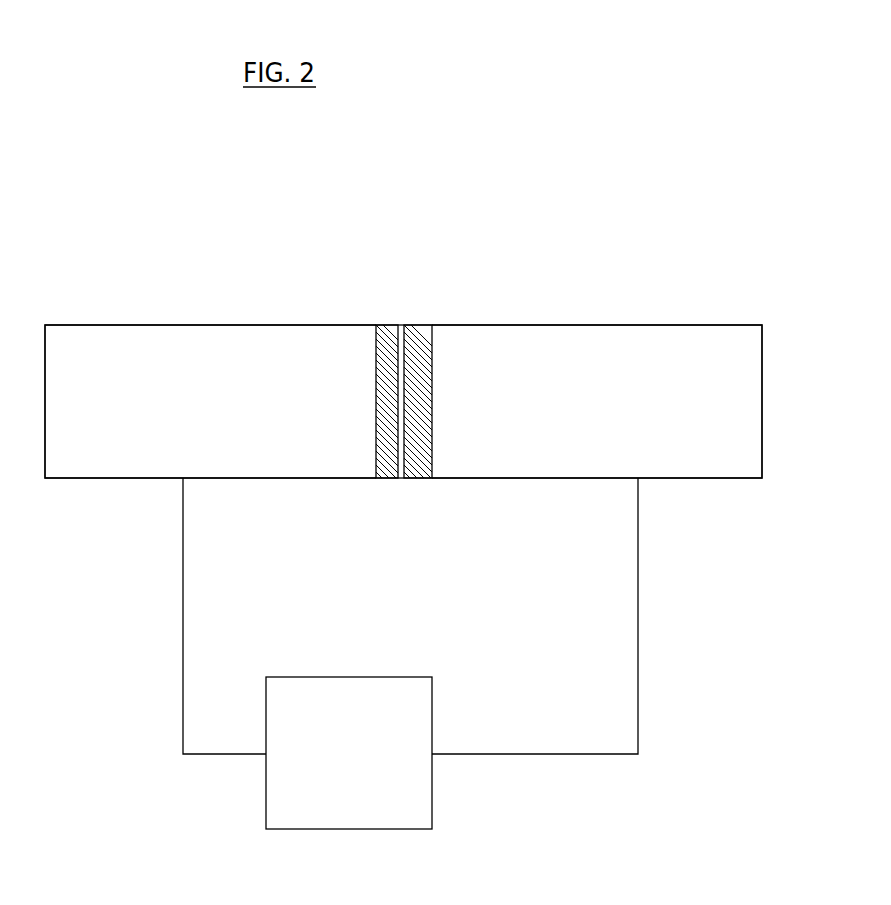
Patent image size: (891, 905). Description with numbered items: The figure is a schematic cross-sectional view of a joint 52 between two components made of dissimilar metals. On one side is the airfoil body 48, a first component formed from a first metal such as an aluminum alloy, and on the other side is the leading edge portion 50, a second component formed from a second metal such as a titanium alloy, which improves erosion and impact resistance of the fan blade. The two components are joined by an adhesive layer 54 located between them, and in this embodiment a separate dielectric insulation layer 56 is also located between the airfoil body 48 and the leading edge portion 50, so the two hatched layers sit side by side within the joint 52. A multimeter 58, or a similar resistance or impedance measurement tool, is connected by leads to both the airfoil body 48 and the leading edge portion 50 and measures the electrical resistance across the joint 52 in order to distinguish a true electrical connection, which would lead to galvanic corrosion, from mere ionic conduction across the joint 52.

The airfoil body 48 is at (163, 412).
The leading edge portion 50 is at (617, 412).
The joint 52 is at (667, 195).
The adhesive layer 54 is at (433, 355).
The dielectric insulation layer 56 is at (377, 352).
The multimeter 58 is at (348, 770).